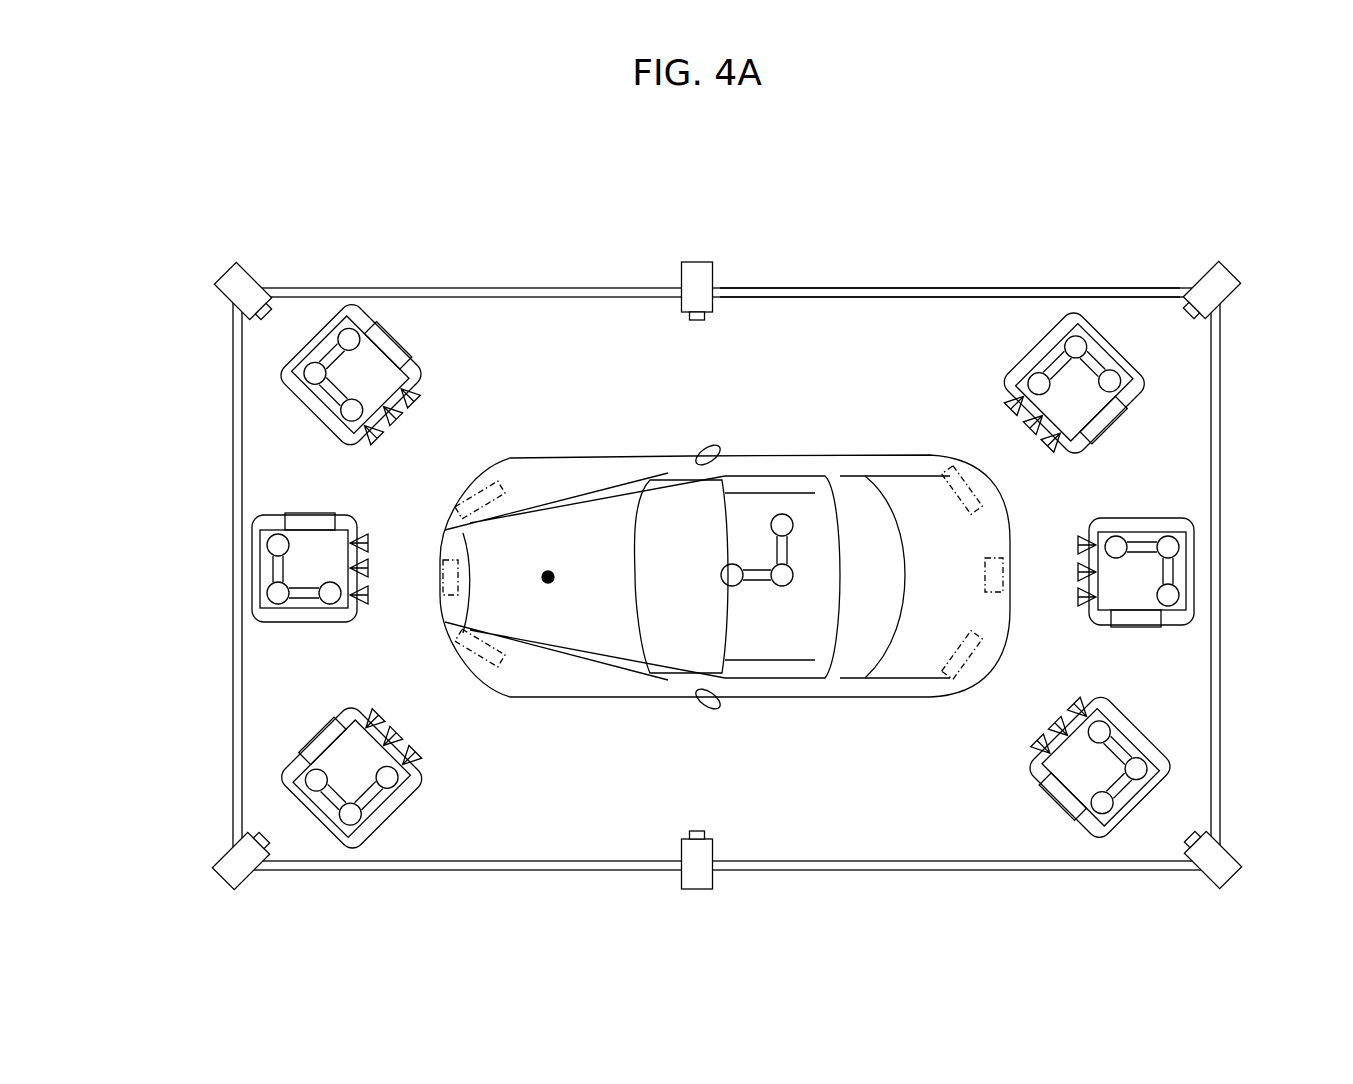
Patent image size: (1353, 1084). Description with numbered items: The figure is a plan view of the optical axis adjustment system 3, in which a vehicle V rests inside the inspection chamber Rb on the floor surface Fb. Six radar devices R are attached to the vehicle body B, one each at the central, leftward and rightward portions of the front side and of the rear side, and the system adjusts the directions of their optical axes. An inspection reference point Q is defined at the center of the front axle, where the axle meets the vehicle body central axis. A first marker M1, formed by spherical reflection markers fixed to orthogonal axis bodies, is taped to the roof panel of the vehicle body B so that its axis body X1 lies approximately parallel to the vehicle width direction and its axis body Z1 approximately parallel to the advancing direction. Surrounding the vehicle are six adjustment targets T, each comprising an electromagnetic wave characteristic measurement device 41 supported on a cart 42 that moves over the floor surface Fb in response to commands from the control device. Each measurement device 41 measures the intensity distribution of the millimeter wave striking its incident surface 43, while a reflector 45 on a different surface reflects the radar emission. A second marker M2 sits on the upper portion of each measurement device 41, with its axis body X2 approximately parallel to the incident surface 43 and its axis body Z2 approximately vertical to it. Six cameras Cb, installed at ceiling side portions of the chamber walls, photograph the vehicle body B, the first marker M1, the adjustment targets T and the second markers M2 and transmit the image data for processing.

The optical axis adjustment system 3 is at (303, 206).
The floor surface Fb is at (619, 344).
The inspection chamber Rb is at (803, 300).
The camera Cb is at (238, 275).
The adjustment target T is at (678, 576).
The electromagnetic wave characteristic measurement device 41 is at (340, 530).
The cart 42 is at (285, 617).
The incident surface 43 is at (352, 542).
The reflector 45 is at (310, 514).
The axis body X2 is at (273, 568).
The axis body Z2 is at (303, 597).
The second marker M2 is at (257, 578).
The vehicle V is at (725, 539).
The vehicle body B is at (918, 462).
The radar device R is at (497, 458).
The axis body X1 is at (752, 557).
The axis body Z1 is at (762, 582).
The first marker M1 is at (816, 495).
The inspection reference point Q is at (545, 573).